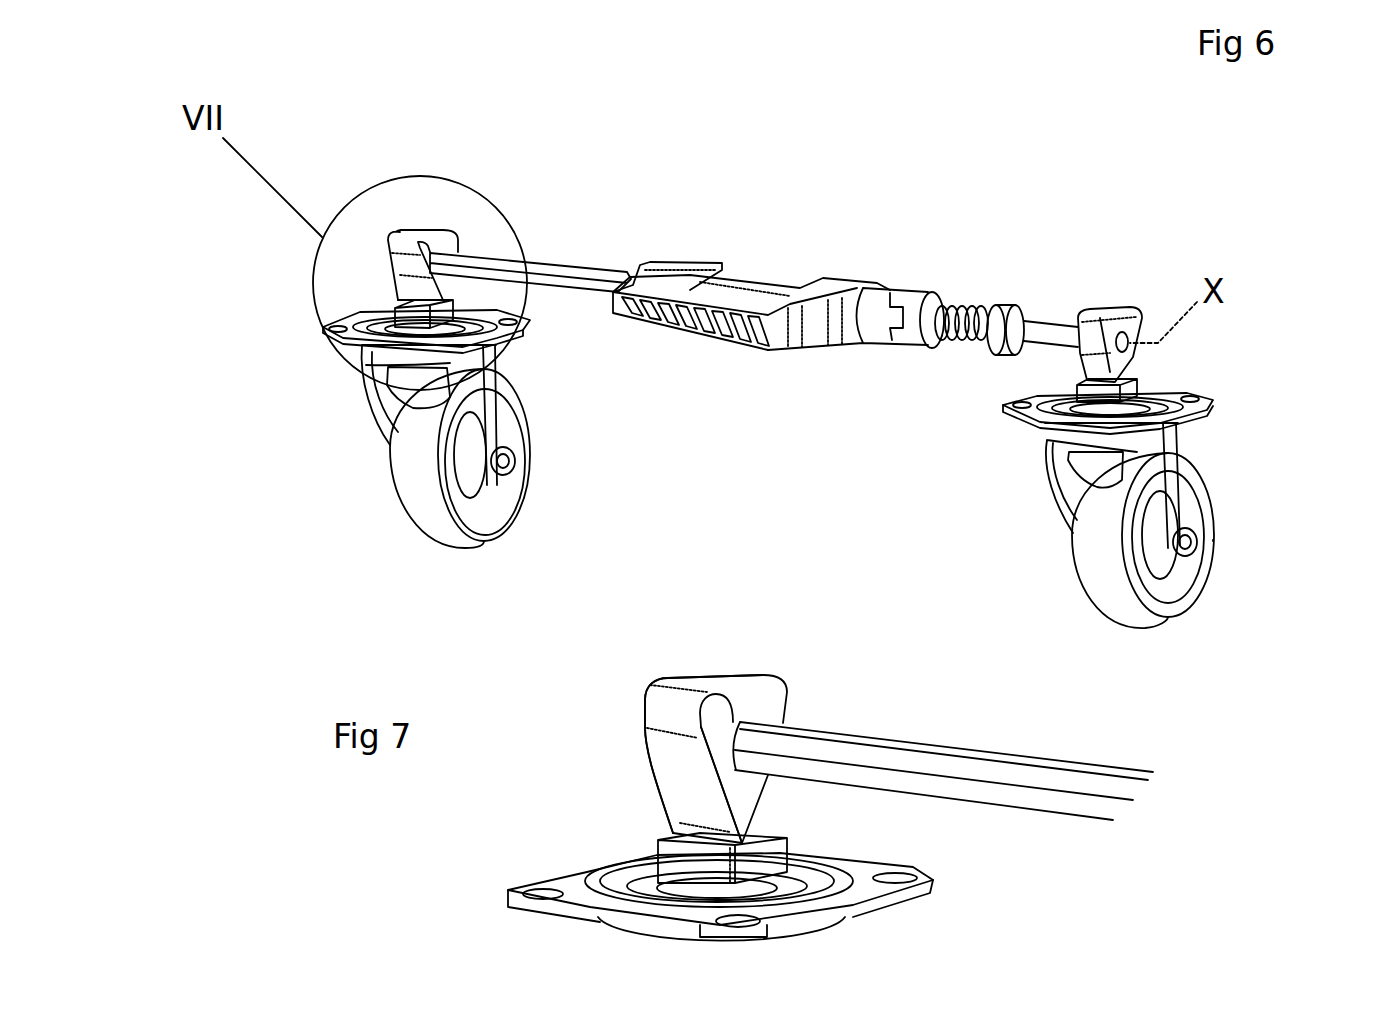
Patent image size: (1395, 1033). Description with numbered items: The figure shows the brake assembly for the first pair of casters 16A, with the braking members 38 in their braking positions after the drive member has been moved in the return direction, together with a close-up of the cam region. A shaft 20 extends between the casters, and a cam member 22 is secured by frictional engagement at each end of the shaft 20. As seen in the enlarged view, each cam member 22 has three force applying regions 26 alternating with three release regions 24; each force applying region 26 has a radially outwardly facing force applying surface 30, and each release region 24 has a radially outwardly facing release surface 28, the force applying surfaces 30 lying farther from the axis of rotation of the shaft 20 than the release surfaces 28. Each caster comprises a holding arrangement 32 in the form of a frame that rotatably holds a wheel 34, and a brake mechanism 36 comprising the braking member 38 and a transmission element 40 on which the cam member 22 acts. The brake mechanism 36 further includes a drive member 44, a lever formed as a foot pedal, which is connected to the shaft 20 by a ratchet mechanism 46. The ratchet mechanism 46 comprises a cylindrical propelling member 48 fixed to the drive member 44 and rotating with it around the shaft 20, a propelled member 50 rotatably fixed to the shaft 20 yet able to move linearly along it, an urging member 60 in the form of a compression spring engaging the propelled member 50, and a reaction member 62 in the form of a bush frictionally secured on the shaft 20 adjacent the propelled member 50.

In FIG. 6, the first pair of casters 16A is at (1218, 558).
In FIG. 6, the shaft 20 is at (594, 261).
In FIG. 7, the shaft 20 is at (985, 795).
In FIG. 6, the cam member 22 is at (418, 230).
In FIG. 7, the cam member 22 is at (603, 706).
In FIG. 7, the release region 24 is at (723, 675).
In FIG. 7, the force applying region 26 is at (673, 707).
In FIG. 7, the release surface 28 is at (707, 678).
In FIG. 7, the force applying surface 30 is at (649, 707).
In FIG. 6, the holding arrangement 32 is at (488, 397).
In FIG. 6, the wheel 34 is at (413, 492).
In FIG. 6, the brake mechanism 36 is at (400, 393).
In FIG. 6, the braking member 38 is at (427, 397).
In FIG. 6, the transmission element 40 is at (397, 307).
In FIG. 7, the transmission element 40 is at (787, 843).
In FIG. 6, the drive member 44 is at (755, 348).
In FIG. 6, the ratchet mechanism 46 is at (922, 290).
In FIG. 6, the propelling member 48 is at (880, 323).
In FIG. 6, the propelled member 50 is at (918, 297).
In FIG. 6, the urging member 60 is at (950, 337).
In FIG. 6, the reaction member 62 is at (1008, 308).